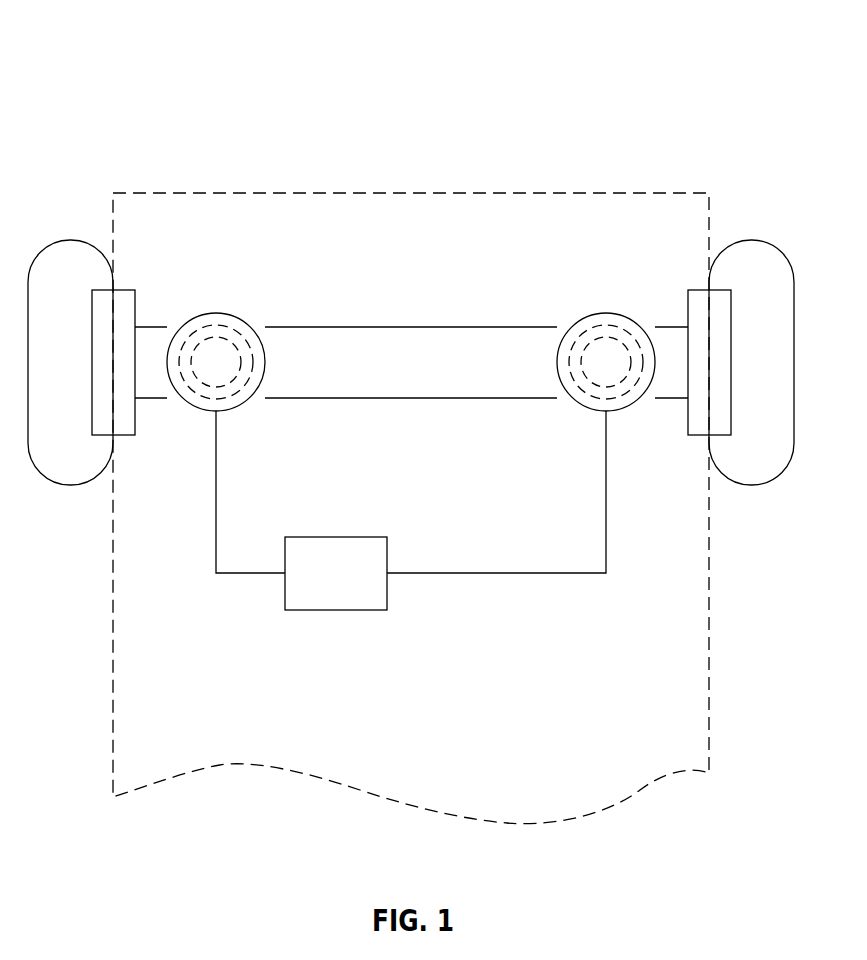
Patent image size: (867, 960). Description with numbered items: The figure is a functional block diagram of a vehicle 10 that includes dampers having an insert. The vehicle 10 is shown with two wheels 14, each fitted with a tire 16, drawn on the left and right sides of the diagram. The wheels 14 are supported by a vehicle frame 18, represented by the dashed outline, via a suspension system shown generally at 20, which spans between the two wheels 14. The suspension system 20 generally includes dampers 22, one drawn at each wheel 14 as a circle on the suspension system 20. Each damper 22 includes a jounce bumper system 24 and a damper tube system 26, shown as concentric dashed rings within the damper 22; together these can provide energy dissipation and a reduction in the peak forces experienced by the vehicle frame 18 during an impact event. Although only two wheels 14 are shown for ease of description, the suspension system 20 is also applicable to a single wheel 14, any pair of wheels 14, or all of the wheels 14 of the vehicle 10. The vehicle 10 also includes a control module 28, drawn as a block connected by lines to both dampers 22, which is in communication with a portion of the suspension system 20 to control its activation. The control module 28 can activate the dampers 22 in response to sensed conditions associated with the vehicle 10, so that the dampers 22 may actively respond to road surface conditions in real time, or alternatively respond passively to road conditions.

The vehicle 10 is at (96, 45).
The wheel 14 is at (135, 418).
The tire 16 is at (72, 240).
The vehicle frame 18 is at (172, 192).
The suspension system 20 is at (518, 277).
The damper 22 is at (257, 412).
The jounce bumper system 24 is at (211, 321).
The damper tube system 26 is at (224, 392).
The control module 28 is at (336, 611).